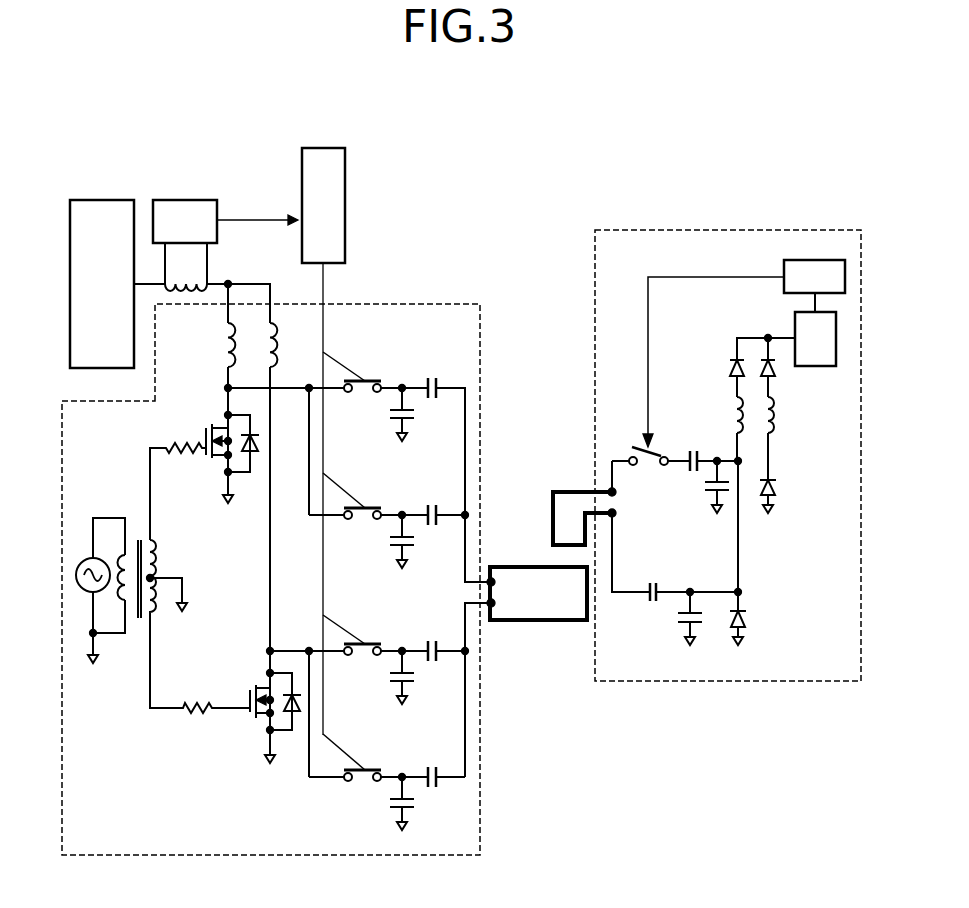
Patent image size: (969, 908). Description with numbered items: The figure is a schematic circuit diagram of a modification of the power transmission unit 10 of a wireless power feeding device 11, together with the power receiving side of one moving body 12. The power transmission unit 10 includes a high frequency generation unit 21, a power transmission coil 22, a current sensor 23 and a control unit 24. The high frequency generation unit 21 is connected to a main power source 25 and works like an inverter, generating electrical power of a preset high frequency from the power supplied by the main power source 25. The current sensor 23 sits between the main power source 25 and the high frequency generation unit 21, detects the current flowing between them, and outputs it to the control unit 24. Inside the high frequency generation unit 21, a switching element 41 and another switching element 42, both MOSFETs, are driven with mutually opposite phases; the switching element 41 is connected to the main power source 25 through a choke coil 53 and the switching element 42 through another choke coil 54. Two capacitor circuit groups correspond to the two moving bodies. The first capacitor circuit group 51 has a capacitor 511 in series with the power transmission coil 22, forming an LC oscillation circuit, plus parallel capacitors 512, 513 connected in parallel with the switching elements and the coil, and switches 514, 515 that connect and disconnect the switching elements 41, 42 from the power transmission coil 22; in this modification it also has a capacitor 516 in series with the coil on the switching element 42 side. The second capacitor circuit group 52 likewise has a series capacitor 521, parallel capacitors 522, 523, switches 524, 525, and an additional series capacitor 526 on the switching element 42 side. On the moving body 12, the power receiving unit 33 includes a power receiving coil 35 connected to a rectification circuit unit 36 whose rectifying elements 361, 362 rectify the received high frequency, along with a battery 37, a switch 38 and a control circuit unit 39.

The power transmission unit 10 is at (479, 206).
The wireless power feeding device 11 is at (601, 118).
The moving body 12 is at (660, 230).
The high frequency generation unit 21 is at (397, 304).
The power transmission coil 22 is at (538, 622).
The current sensor 23 is at (186, 200).
The control unit 24 is at (321, 148).
The main power source 25 is at (102, 200).
The power receiving unit 33 is at (585, 263).
The power receiving coil 35 is at (580, 490).
The rectification circuit unit 36 is at (768, 549).
The battery 37 is at (815, 366).
The switch 38 is at (632, 447).
The control circuit unit 39 is at (815, 260).
The switching element 41 is at (208, 420).
The switching element 42 is at (250, 684).
The first capacitor circuit group 51 is at (467, 354).
The second capacitor circuit group 52 is at (450, 473).
The choke coil 53 is at (220, 347).
The choke coil 54 is at (283, 348).
The rectifying element 361 is at (780, 487).
The rectifying element 362 is at (750, 620).
The capacitor 511 is at (432, 378).
The capacitor 512 is at (413, 418).
The capacitor 513 is at (396, 682).
The switch 514 is at (366, 382).
The switch 515 is at (370, 645).
The capacitor 516 is at (440, 661).
The capacitor 521 is at (436, 528).
The capacitor 522 is at (396, 546).
The capacitor 523 is at (395, 806).
The switch 524 is at (364, 500).
The switch 525 is at (400, 752).
The capacitor 526 is at (440, 788).